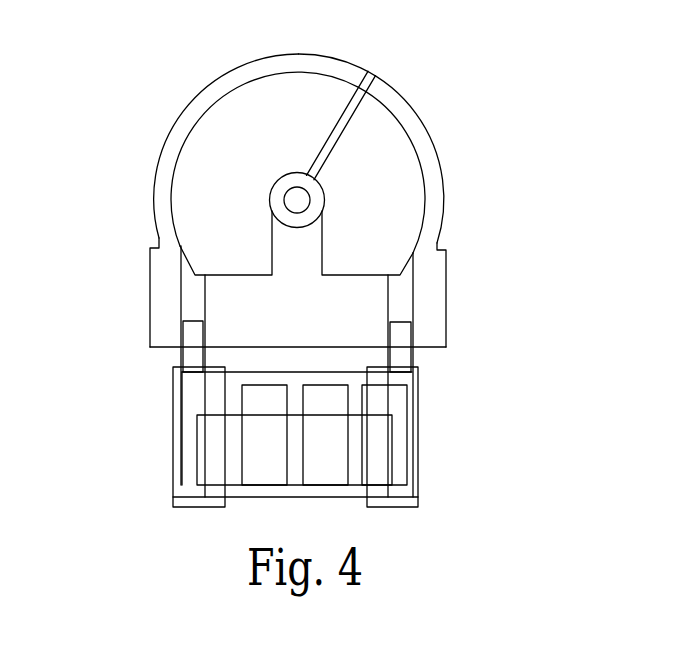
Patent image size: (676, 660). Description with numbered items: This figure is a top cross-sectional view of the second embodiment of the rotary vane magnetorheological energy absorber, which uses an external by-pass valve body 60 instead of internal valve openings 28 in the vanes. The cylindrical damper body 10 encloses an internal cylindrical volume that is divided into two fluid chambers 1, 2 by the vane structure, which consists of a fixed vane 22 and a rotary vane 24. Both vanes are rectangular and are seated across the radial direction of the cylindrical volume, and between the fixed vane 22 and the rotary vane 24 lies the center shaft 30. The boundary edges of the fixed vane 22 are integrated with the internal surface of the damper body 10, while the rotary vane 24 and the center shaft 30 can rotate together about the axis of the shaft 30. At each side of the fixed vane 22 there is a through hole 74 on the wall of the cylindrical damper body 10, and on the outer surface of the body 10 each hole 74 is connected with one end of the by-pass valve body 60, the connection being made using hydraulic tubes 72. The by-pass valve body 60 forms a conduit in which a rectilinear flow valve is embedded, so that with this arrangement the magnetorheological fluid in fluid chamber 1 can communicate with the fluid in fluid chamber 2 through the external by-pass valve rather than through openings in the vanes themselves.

The fluid chamber 1 is at (207, 143).
The fluid chamber 2 is at (393, 148).
The cylindrical damper body 10 is at (425, 327).
The fixed vane 22 is at (283, 266).
The rotary vane 24 is at (343, 113).
The internal valve openings 28 is at (369, 80).
The center shaft 30 is at (325, 197).
The by-pass valve body 60 is at (190, 457).
The hydraulic tubes 72 is at (395, 357).
The through hole 74 is at (192, 300).